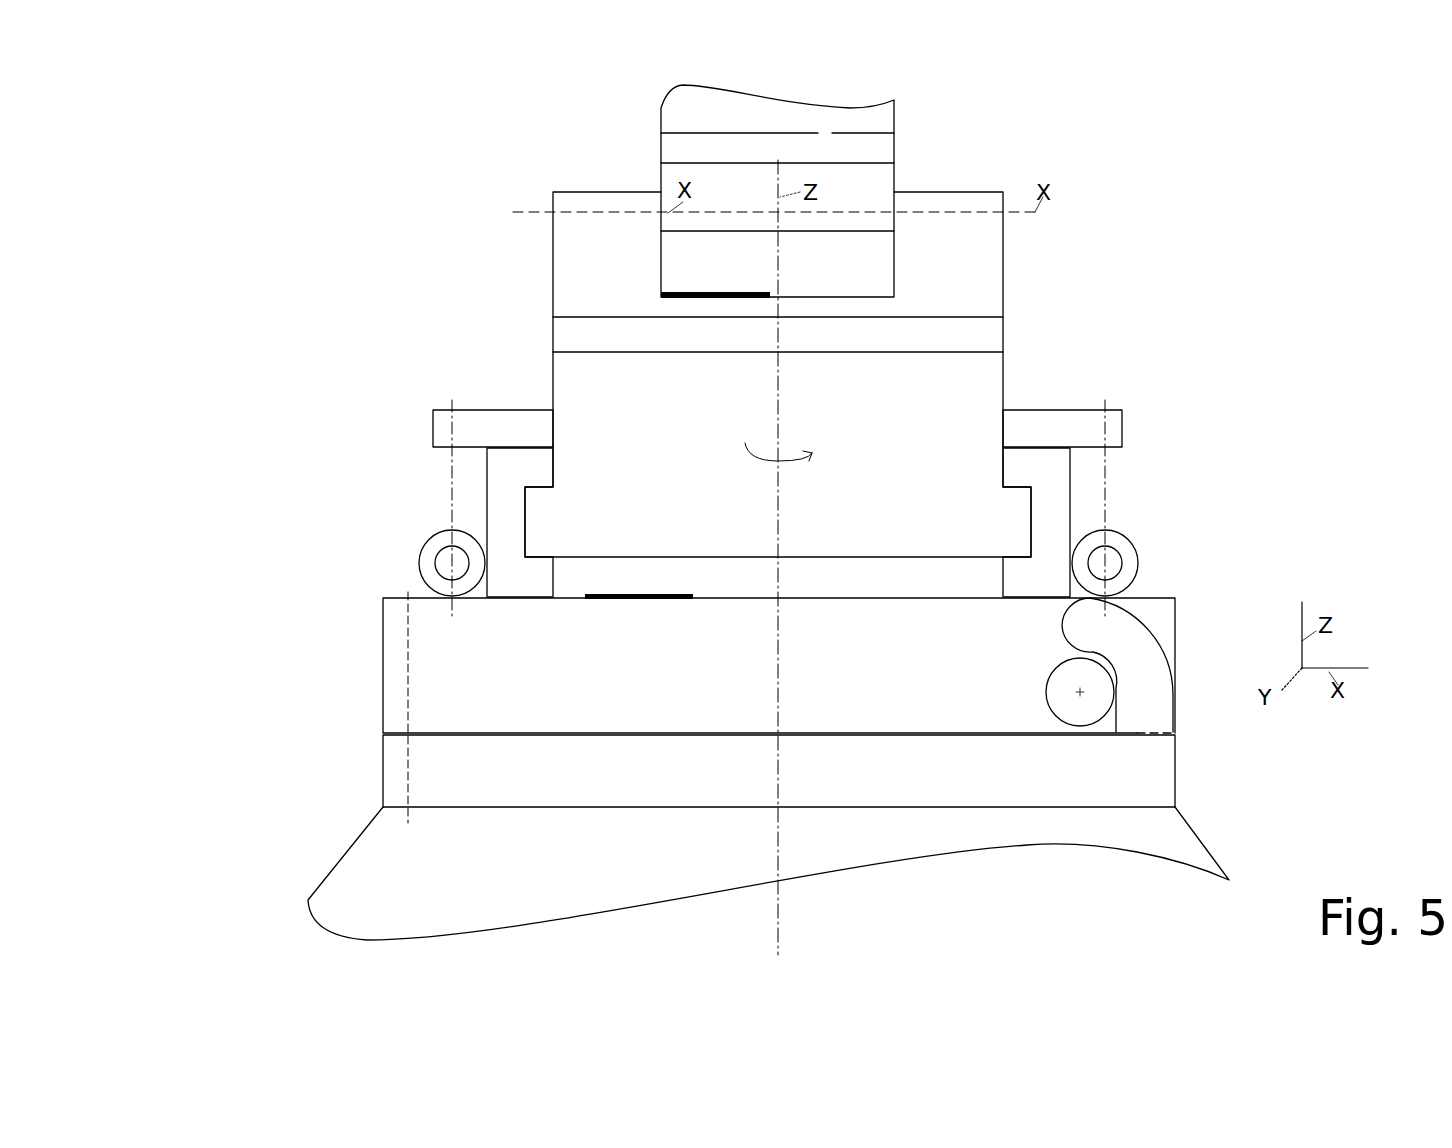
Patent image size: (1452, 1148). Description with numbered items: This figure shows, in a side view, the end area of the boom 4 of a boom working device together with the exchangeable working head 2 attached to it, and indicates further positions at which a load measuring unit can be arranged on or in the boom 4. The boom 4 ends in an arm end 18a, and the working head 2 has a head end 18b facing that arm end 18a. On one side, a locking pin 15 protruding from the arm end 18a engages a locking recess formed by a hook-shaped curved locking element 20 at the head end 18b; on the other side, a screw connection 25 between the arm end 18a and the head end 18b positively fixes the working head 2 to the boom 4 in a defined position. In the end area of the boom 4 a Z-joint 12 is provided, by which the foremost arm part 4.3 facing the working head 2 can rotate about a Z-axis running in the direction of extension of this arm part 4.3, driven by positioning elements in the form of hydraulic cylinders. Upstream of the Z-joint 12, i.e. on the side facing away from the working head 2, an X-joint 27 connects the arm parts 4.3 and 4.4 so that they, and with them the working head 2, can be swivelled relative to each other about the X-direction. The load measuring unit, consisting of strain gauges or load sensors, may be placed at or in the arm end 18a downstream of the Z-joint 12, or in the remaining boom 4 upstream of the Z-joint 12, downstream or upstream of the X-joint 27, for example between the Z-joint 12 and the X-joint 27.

The working head 2 is at (412, 873).
The boom 4 is at (800, 374).
The arm part 4.3 is at (685, 111).
The arm part 4.4 is at (955, 381).
The Z-joint 12 is at (1112, 492).
The locking pin 15 is at (1062, 695).
The arm end 18a is at (428, 637).
The head end 18b is at (457, 777).
The locking element 20 is at (1133, 642).
The screw connection 25 is at (409, 687).
The X-joint 27 is at (513, 195).